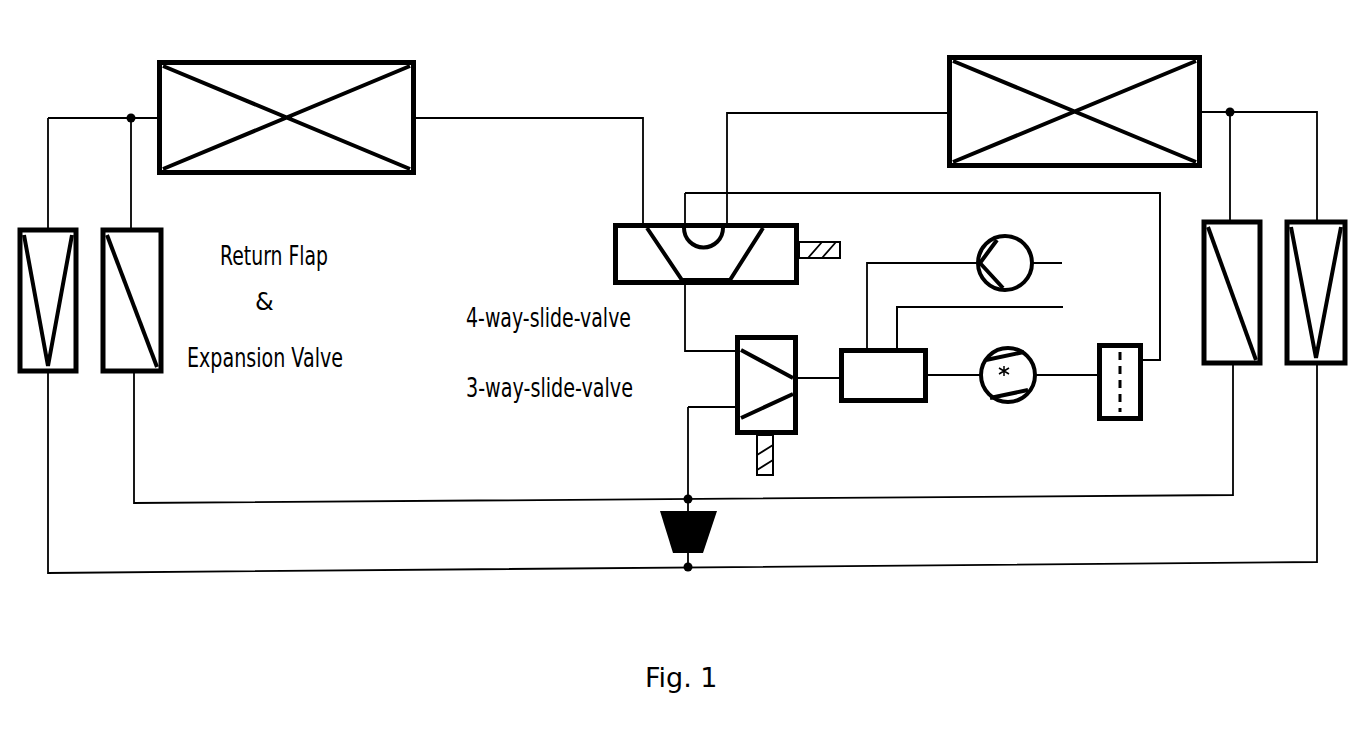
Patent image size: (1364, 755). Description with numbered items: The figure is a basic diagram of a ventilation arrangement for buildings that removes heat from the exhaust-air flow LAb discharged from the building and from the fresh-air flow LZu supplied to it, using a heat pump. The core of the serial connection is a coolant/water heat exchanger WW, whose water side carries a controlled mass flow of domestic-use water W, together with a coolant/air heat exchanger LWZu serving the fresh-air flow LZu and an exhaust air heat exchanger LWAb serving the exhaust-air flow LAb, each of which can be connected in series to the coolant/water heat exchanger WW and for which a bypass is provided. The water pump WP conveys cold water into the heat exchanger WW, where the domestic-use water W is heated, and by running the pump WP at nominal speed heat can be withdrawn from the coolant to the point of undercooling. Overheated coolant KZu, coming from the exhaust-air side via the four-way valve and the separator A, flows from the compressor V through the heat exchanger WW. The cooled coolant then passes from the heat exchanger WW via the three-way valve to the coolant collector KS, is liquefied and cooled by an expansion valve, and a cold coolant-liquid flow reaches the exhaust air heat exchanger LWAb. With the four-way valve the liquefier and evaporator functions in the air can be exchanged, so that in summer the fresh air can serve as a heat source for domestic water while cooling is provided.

The fresh-air flow LZu is at (287, 98).
The coolant/air heat exchanger LWZu is at (287, 118).
The exhaust-air flow LAb is at (1075, 91).
The exhaust air heat exchanger LWAb is at (1075, 112).
The water pump WP is at (1005, 251).
The domestic-use water W is at (980, 311).
The coolant/water heat exchanger WW is at (884, 376).
The overheated coolant KZu is at (1141, 276).
The compressor V is at (1008, 399).
The separator A is at (1120, 402).
The coolant collector KS is at (707, 532).